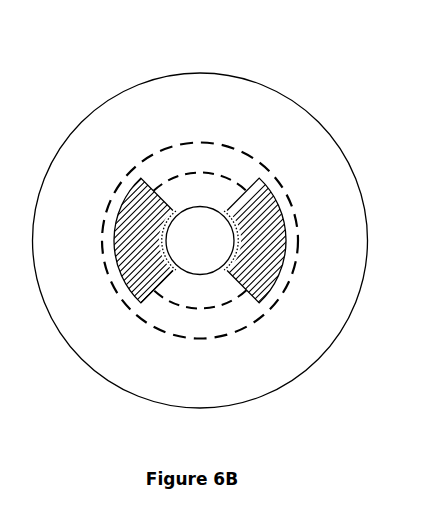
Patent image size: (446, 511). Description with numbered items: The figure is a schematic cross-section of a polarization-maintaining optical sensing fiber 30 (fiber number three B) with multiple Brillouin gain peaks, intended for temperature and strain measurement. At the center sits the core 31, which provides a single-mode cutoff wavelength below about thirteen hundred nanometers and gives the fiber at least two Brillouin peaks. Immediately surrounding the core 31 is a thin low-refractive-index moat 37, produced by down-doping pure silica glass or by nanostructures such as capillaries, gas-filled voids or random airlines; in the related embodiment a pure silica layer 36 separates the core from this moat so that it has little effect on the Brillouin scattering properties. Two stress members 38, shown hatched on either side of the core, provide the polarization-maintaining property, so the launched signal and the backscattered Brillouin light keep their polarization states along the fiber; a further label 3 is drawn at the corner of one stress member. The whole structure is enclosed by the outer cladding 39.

The optical sensing fiber 30 is at (228, 40).
The core 31 is at (198, 250).
The pure silica layer 36 is at (190, 188).
The moat layer 37 is at (155, 330).
The stress members 38 is at (264, 200).
The cladding 39 is at (176, 380).
The rotor 3 is at (138, 296).